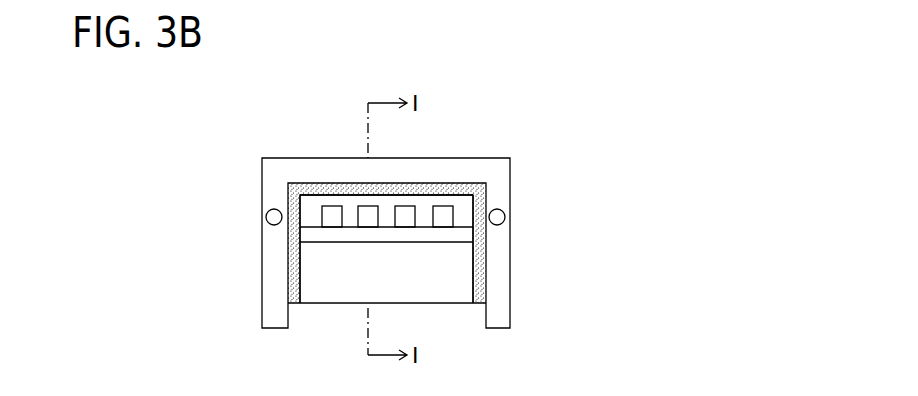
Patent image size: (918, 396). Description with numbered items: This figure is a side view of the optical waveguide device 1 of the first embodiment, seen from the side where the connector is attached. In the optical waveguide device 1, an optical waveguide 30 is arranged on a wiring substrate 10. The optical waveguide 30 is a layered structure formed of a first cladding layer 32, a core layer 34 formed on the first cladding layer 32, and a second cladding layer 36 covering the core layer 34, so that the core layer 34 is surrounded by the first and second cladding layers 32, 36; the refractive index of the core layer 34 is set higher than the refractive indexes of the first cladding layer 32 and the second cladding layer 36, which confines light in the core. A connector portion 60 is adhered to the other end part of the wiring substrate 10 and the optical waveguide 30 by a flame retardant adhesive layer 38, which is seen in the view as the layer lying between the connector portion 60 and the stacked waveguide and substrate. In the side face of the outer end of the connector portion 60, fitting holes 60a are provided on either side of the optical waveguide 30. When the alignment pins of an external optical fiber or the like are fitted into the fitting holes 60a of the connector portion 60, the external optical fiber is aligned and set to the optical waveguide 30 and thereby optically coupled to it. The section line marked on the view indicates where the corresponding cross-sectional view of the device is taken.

The optical waveguide device 1 is at (359, 74).
The wiring substrate 10 is at (449, 305).
The optical waveguide 30 is at (456, 211).
The first cladding layer 32 is at (453, 235).
The core layer 34 is at (445, 220).
The second cladding layer 36 is at (445, 202).
The flame retardant adhesive layer 38 is at (405, 185).
The connector portion 60 is at (450, 165).
The fitting holes 60a is at (267, 216).